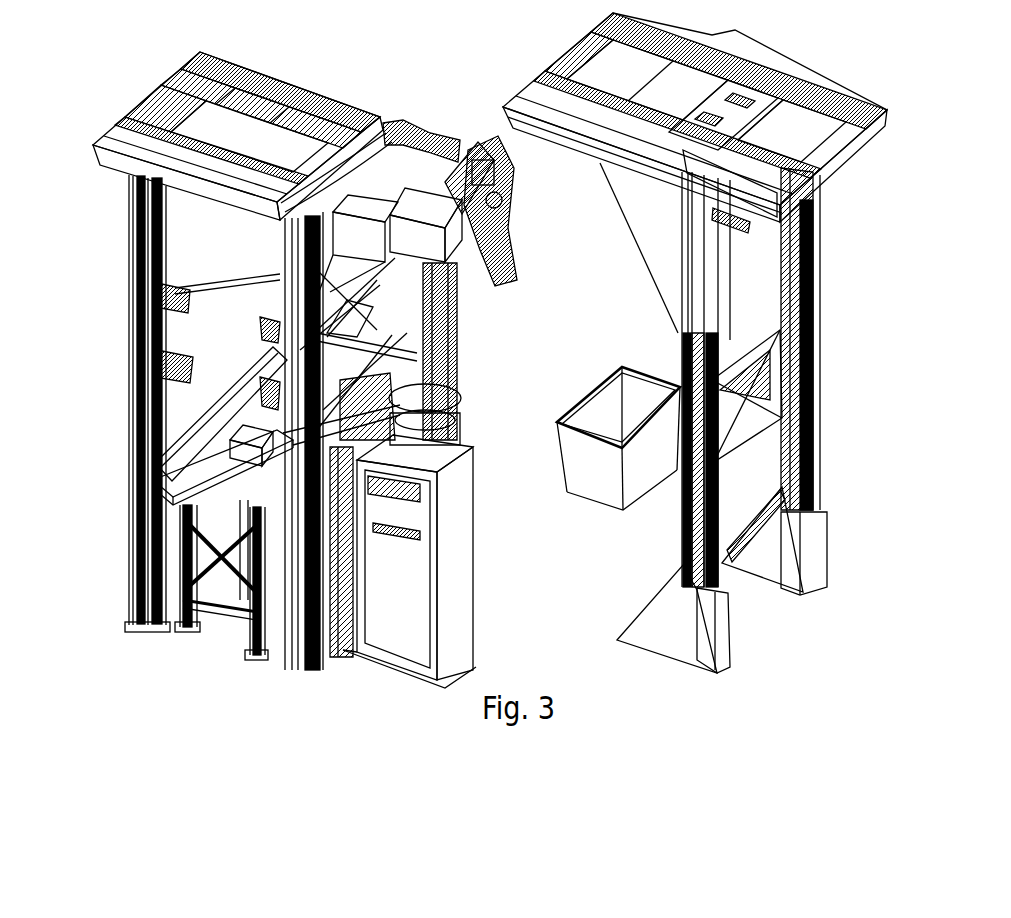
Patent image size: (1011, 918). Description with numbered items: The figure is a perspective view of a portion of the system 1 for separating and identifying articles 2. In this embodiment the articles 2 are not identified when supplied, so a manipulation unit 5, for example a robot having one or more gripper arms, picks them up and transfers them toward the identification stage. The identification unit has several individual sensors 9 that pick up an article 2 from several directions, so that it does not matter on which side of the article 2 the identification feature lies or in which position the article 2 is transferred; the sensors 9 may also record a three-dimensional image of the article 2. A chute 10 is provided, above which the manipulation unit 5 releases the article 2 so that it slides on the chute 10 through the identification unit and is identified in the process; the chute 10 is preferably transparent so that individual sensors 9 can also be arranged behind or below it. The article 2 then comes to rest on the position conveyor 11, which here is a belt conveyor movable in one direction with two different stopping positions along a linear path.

The system 1 is at (932, 119).
The article 2 is at (257, 407).
The manipulation unit 5 is at (517, 267).
The individual sensor 9 is at (400, 128).
The chute 10 is at (457, 347).
The position conveyor 11 is at (130, 500).